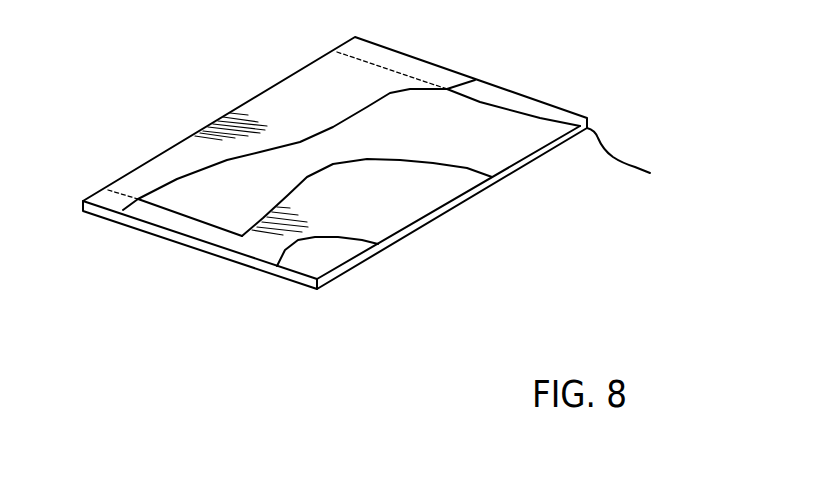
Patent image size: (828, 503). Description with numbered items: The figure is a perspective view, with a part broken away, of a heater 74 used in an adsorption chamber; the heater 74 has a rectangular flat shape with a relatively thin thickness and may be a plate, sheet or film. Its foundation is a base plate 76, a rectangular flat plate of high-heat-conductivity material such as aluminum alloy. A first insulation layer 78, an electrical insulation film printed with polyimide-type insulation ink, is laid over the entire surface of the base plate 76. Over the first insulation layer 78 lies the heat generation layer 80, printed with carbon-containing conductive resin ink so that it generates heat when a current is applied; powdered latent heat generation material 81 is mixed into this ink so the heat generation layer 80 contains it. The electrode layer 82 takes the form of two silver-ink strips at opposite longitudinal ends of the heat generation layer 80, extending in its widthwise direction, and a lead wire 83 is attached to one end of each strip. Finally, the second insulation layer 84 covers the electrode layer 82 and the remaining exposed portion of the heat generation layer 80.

The heater 74 is at (228, 67).
The base plate 76 is at (325, 257).
The first insulation layer 78 is at (422, 205).
The heat generation layer 80 is at (487, 112).
The latent heat generation material 81 is at (510, 148).
The electrode layer 82 is at (182, 225).
The lead wire 83 is at (628, 160).
The second insulation layer 84 is at (300, 87).